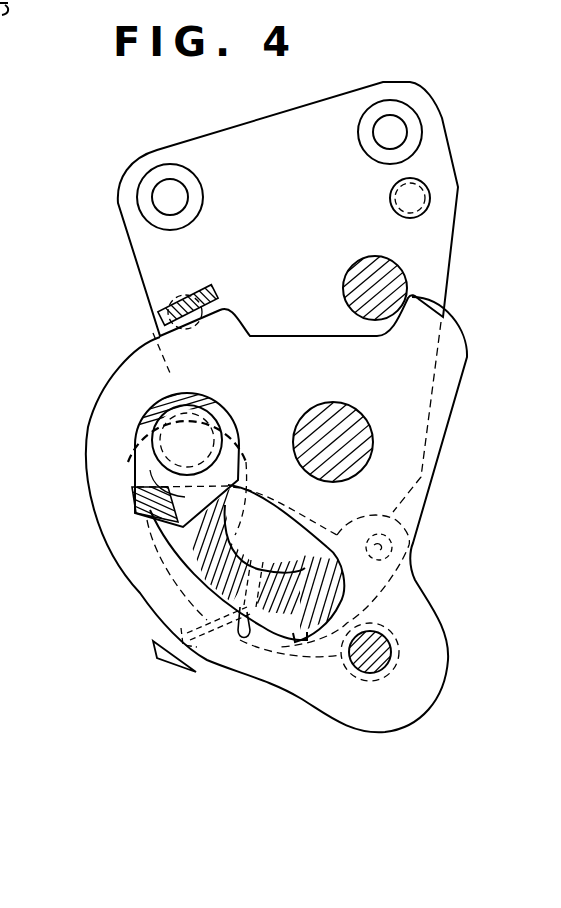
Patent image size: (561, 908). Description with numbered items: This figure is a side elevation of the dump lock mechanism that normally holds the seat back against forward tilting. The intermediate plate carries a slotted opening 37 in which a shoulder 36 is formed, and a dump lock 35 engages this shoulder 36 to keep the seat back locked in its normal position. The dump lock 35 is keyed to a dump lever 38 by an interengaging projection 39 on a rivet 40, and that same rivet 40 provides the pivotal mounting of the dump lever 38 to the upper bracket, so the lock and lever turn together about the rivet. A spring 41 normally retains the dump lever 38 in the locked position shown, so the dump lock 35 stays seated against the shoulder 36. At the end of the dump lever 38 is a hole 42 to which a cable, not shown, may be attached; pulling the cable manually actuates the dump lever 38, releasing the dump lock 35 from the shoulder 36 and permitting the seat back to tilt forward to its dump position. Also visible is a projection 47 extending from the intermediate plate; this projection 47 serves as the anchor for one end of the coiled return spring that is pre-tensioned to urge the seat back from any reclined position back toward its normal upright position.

The dump lock 35 is at (130, 481).
The shoulder 36 is at (133, 517).
The slotted opening 37 is at (183, 545).
The dump lever 38 is at (420, 587).
The interengaging projection 39 is at (147, 473).
The rivet 40 is at (203, 438).
The spring 41 is at (167, 650).
The hole 42 is at (412, 543).
The projection 47 is at (200, 293).